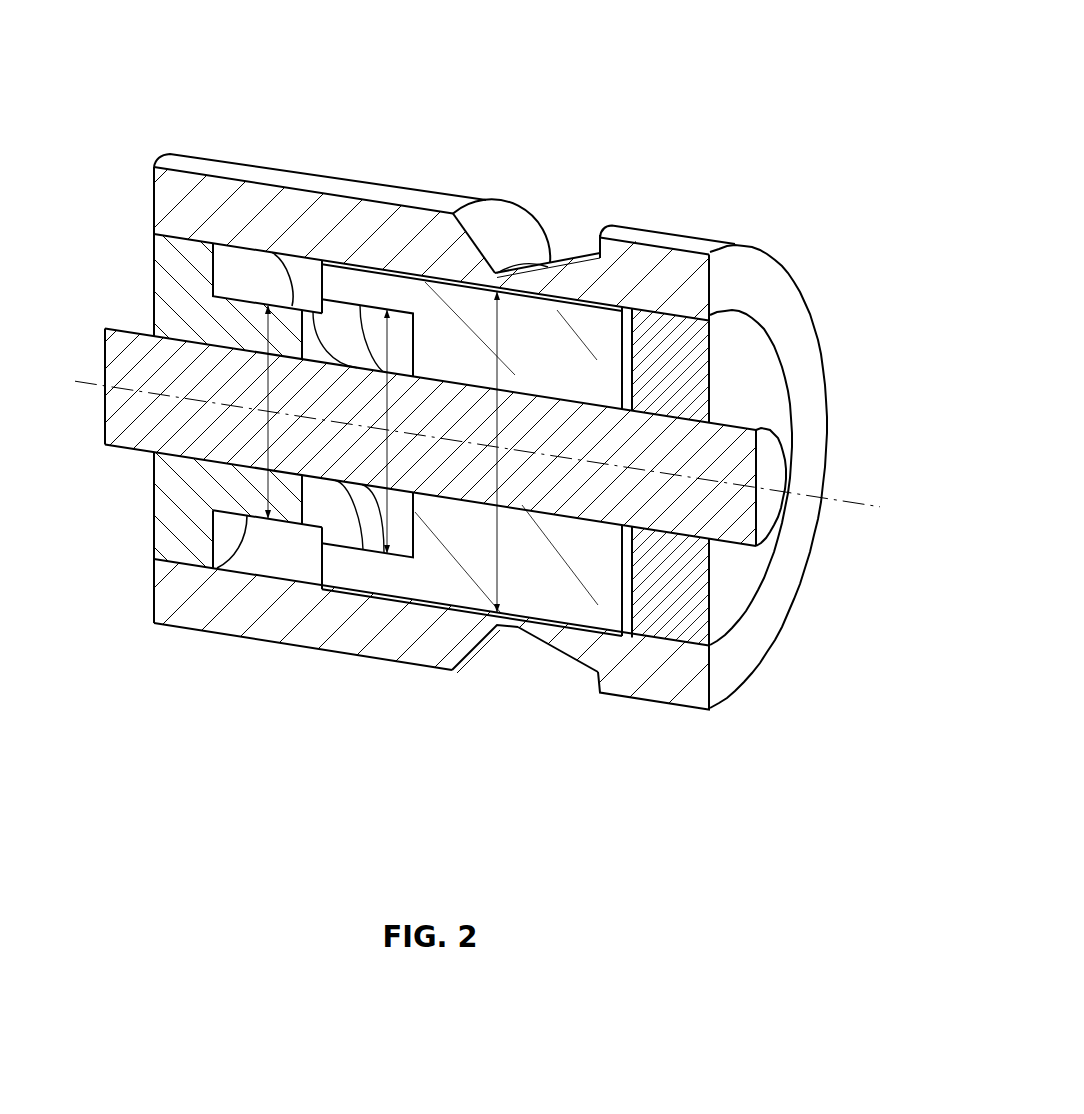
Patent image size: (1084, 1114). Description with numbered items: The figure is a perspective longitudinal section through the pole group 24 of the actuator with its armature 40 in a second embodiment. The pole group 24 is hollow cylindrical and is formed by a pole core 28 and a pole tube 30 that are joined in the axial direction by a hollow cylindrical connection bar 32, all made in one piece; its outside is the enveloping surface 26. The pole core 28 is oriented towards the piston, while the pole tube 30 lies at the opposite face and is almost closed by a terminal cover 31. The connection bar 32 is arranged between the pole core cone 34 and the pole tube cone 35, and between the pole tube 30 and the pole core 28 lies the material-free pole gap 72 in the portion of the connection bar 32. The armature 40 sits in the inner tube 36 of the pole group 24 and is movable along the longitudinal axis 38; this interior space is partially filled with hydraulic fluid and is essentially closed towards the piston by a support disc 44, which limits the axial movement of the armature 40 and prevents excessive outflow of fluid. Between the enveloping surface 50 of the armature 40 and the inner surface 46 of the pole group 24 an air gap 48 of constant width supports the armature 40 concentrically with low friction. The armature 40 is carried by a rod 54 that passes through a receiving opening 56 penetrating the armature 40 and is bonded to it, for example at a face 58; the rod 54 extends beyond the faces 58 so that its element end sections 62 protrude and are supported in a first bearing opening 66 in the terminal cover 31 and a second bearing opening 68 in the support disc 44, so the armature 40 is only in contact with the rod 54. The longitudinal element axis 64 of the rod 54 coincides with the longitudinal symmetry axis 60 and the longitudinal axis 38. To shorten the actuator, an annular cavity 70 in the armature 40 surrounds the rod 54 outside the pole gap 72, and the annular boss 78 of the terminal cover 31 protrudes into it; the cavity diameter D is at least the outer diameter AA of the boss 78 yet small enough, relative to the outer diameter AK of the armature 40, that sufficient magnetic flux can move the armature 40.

The pole group 24 is at (818, 184).
The enveloping surface 26 is at (220, 178).
The pole core 28 is at (674, 238).
The pole tube 30 is at (310, 182).
The terminal cover 31 is at (146, 243).
The connection bar 32 is at (510, 630).
The pole core cone 34 is at (578, 660).
The pole tube cone 35 is at (482, 645).
The inner tube 36 is at (249, 563).
The longitudinal axis 38 is at (518, 444).
The armature 40 is at (547, 350).
The support disc 44 is at (718, 352).
The inner surface 46 is at (267, 253).
The air gap 48 is at (417, 296).
The enveloping surface 50 is at (356, 258).
The rod 54 is at (764, 516).
The receiving opening 56 is at (578, 498).
The face 58 is at (323, 590).
The longitudinal symmetry axis 60 is at (518, 444).
The element end sections 62 is at (486, 422).
The longitudinal element axis 64 is at (838, 500).
The first bearing opening 66 is at (170, 443).
The second bearing opening 68 is at (702, 522).
The cavity 70 is at (378, 600).
The pole gap 72 is at (524, 675).
The annular boss 78 is at (245, 586).
The outer diameter of the boss AA is at (228, 511).
The outer diameter of the armature AK is at (497, 545).
The diameter of the cavity D is at (328, 543).